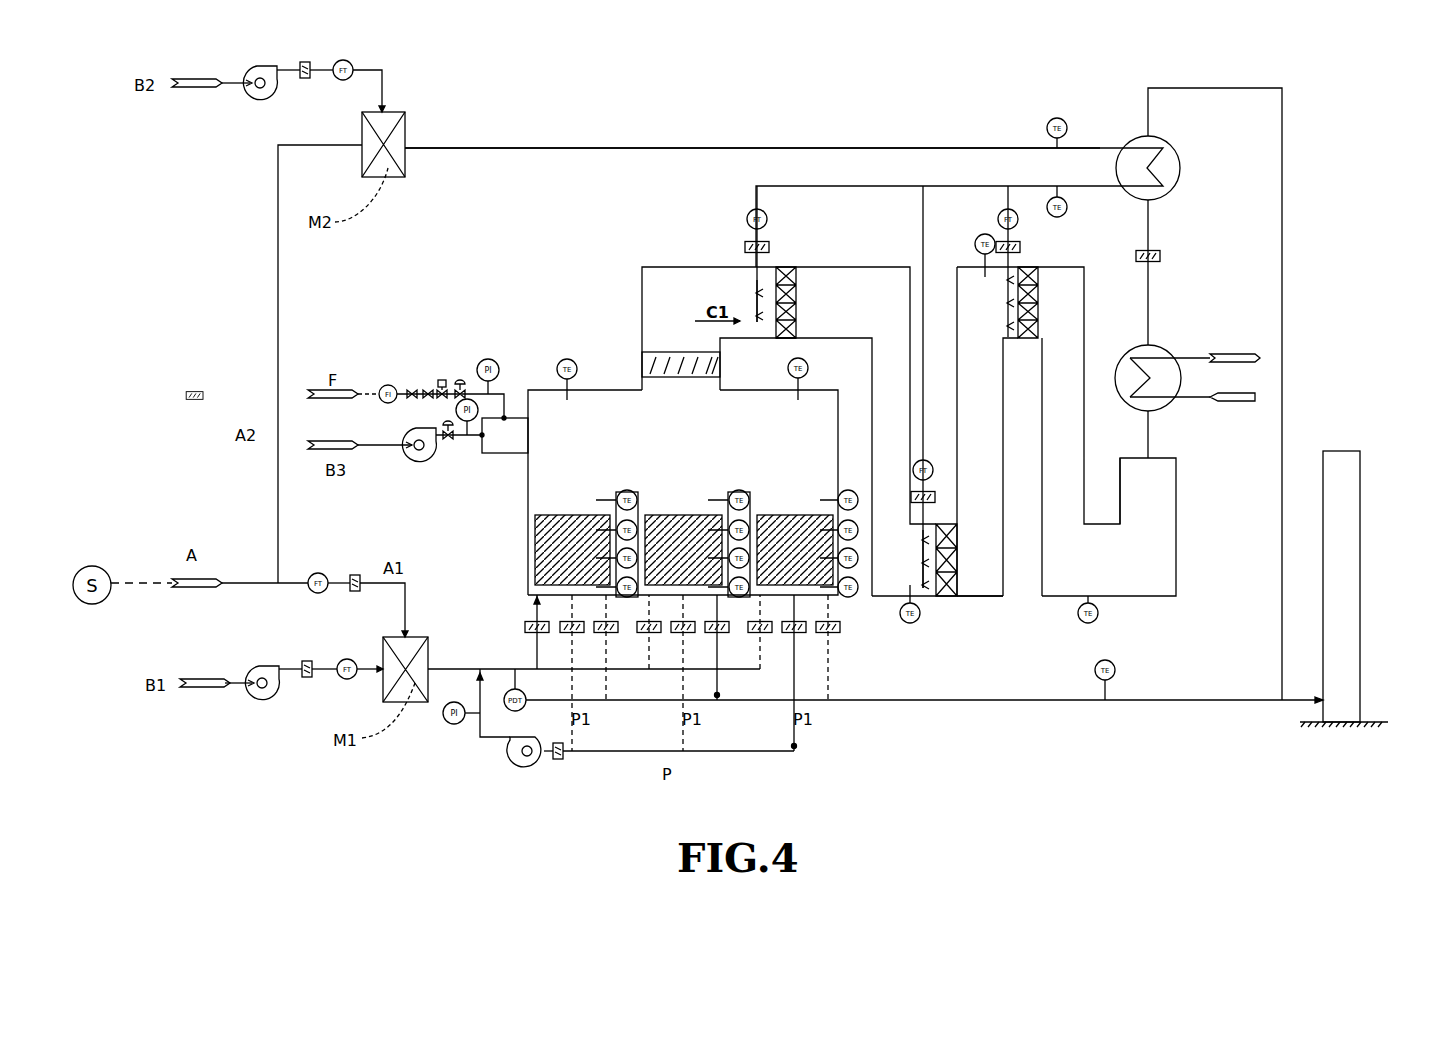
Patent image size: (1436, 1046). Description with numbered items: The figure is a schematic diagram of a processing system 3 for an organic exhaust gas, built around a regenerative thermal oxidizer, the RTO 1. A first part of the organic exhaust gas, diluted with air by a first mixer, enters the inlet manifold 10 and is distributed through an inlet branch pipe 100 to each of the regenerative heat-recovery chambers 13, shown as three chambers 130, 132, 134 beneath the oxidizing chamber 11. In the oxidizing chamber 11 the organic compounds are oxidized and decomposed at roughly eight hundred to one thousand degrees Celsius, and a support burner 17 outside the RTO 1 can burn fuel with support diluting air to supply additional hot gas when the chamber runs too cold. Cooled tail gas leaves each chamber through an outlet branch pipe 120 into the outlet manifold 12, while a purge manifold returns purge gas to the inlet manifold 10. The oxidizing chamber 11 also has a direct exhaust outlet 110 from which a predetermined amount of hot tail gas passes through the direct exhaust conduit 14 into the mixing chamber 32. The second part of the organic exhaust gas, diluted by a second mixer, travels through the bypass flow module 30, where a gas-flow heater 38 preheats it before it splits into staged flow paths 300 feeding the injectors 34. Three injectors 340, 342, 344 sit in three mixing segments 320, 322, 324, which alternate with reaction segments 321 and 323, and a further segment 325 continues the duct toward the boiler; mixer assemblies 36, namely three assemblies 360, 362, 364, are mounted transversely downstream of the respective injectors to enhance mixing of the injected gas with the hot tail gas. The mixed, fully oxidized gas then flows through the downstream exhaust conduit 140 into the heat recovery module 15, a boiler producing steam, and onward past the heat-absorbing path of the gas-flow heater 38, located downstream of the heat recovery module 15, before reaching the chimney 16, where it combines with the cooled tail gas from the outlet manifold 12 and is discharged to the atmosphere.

The RTO 1 is at (556, 306).
The processing system 3 is at (1340, 110).
The inlet manifold 10 is at (468, 672).
The oxidizing chamber 11 is at (632, 410).
The outlet manifold 12 is at (962, 703).
The regenerative heat-recovery chambers 13 is at (637, 523).
The direct exhaust conduit 14 is at (948, 467).
The heat recovery module 15 is at (1183, 380).
The chimney 16 is at (1360, 583).
The support burner 17 is at (515, 455).
The bypass flow module 30 is at (700, 146).
The mixing chamber 32 is at (670, 290).
The injectors 34 is at (782, 232).
The mixer assemblies 36 is at (812, 336).
The gas-flow heater 38 is at (1168, 160).
The inlet branch pipe 100 is at (594, 632).
The direct exhaust outlet 110 is at (705, 362).
The outlet branch pipe 120 is at (852, 686).
The regenerative heat-recovery chamber 130 is at (575, 522).
The regenerative heat-recovery chamber 132 is at (667, 522).
The regenerative heat-recovery chamber 134 is at (778, 522).
The downstream exhaust conduit 140 is at (1150, 305).
The staged flow paths 300 is at (870, 387).
The mixing segment 320 is at (893, 285).
The reaction segment 321 is at (937, 509).
The mixing segment 322 is at (995, 557).
The reaction segment 323 is at (989, 467).
The mixing segment 324 is at (1067, 290).
The fifth duct section 325 is at (1155, 575).
The injector 340 is at (752, 312).
The injector 342 is at (922, 557).
The injector 344 is at (1005, 303).
The mixer assembly 360 is at (795, 310).
The mixer assembly 362 is at (960, 563).
The mixer assembly 364 is at (1045, 300).